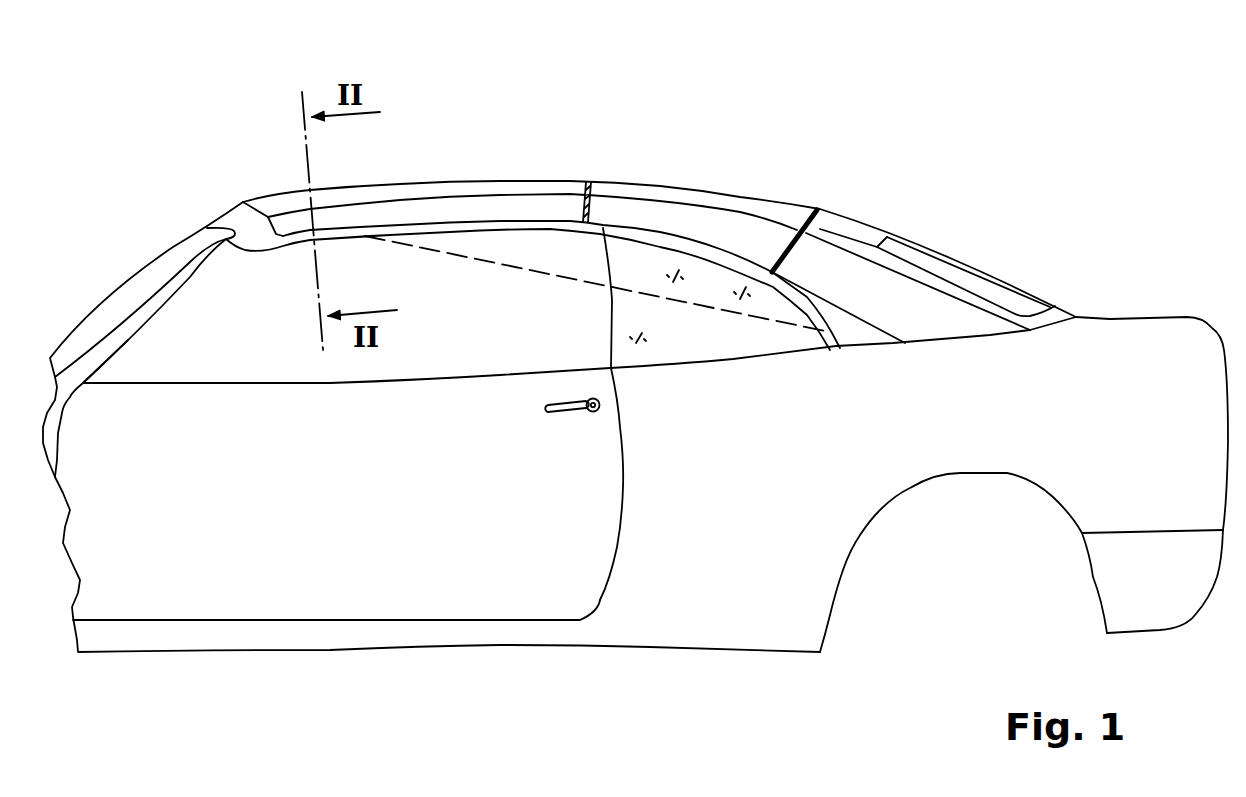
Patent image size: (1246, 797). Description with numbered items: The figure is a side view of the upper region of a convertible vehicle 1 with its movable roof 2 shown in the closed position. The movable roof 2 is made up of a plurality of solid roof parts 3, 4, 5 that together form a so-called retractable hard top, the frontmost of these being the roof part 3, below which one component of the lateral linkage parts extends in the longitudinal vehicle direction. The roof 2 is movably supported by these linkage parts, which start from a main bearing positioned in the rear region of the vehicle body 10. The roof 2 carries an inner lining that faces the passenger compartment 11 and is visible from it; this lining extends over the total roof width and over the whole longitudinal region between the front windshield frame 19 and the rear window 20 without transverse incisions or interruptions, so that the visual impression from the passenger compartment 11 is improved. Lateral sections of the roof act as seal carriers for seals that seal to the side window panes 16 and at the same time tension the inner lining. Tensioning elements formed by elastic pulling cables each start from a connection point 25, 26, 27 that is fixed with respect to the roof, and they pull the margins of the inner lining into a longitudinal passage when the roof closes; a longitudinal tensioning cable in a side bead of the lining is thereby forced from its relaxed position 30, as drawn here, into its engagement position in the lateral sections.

The convertible vehicle 1 is at (982, 104).
The movable roof 2 is at (660, 162).
The roof part 3 is at (527, 188).
The roof part 4 is at (735, 205).
The roof part 5 is at (862, 228).
The vehicle body 10 is at (762, 480).
The passenger compartment 11 is at (266, 338).
The side window pane 16 is at (699, 345).
The front windshield frame 19 is at (194, 270).
The rear window 20 is at (968, 270).
The connection point 25 is at (467, 243).
The connection point 26 is at (584, 247).
The connection point 27 is at (660, 254).
The relaxed position 30 is at (749, 323).